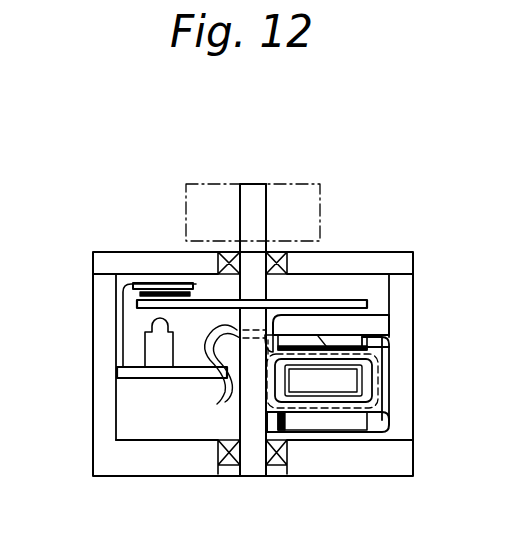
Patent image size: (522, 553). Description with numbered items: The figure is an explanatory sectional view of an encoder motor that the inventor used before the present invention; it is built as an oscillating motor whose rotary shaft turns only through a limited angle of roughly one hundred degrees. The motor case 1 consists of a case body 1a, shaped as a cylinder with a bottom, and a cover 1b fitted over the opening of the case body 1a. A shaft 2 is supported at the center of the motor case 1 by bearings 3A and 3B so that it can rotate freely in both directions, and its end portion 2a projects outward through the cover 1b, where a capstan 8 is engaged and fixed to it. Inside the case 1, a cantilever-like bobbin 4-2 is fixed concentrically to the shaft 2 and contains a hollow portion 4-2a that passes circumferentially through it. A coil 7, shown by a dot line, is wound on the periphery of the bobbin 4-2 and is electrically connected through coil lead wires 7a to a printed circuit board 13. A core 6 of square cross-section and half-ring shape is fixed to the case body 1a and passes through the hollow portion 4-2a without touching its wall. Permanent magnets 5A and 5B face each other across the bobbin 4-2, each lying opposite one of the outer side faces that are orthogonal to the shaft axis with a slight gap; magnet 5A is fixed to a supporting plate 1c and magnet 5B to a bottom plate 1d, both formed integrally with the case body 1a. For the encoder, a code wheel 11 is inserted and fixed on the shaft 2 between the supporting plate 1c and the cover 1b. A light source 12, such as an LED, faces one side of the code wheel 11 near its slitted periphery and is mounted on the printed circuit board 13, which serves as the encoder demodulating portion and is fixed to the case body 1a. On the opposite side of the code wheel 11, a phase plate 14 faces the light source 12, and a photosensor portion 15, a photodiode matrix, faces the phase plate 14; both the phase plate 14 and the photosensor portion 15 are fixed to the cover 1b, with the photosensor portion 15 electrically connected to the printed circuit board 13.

The motor case 1 is at (84, 286).
The case body 1a is at (97, 311).
The cover 1b is at (110, 252).
The supporting plate 1c is at (408, 304).
The bottom plate 1d is at (312, 462).
The shaft 2 is at (272, 186).
The end portion 2a is at (268, 208).
The bearing 3A is at (287, 267).
The bearing 3B is at (280, 478).
The bobbin 4-2 is at (360, 381).
The hollow portion 4-2a is at (372, 392).
The magnet 5A is at (358, 345).
The magnet 5B is at (370, 420).
The core 6 is at (345, 380).
The coil 7 is at (363, 405).
The coil lead wires 7a is at (221, 380).
The capstan 8 is at (180, 188).
The code wheel 11 is at (192, 310).
The light source 12 is at (146, 326).
The printed circuit board 13 is at (168, 380).
The phase plate 14 is at (193, 294).
The photosensor portion 15 is at (164, 283).